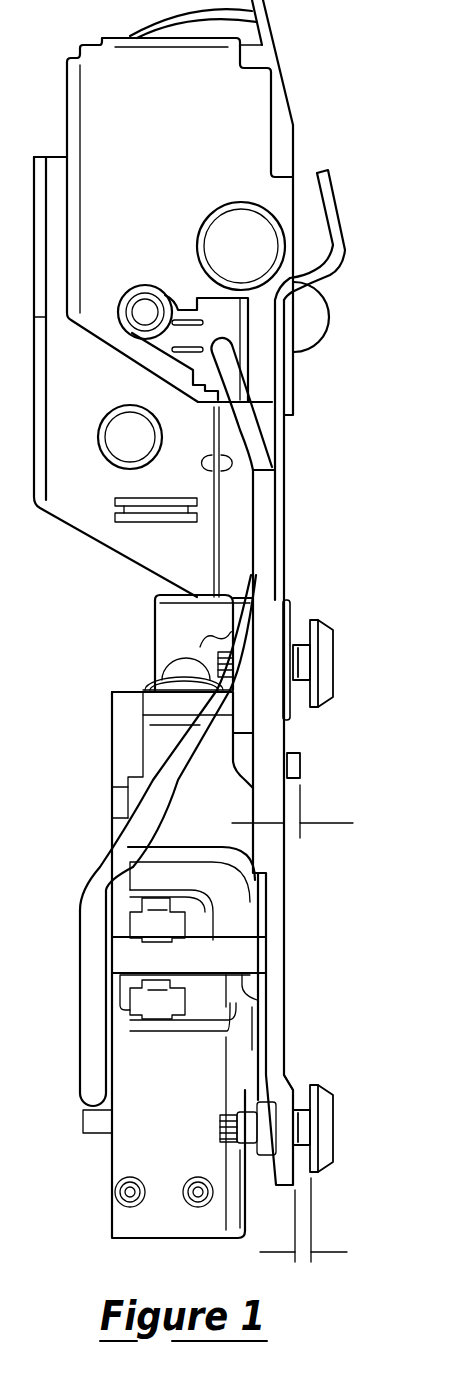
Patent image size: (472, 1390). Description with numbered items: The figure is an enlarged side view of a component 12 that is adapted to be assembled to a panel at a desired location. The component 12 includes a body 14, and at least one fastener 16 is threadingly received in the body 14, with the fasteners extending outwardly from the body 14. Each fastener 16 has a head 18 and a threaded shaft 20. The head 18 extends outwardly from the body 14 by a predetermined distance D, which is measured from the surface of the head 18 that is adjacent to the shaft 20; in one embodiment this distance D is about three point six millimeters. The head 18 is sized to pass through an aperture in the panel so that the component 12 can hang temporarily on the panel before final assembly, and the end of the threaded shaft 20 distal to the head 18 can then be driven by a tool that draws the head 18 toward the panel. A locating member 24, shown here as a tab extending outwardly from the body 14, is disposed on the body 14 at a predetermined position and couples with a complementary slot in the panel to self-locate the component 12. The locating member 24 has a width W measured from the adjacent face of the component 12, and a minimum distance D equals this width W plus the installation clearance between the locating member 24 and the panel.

The component 12 is at (369, 126).
The body 14 is at (296, 386).
The fastener 16 is at (340, 640).
The head 18 is at (336, 677).
The threaded shaft 20 is at (293, 630).
The locating member 24 is at (302, 764).
The locating member width W is at (337, 823).
The predetermined distance D is at (337, 1252).